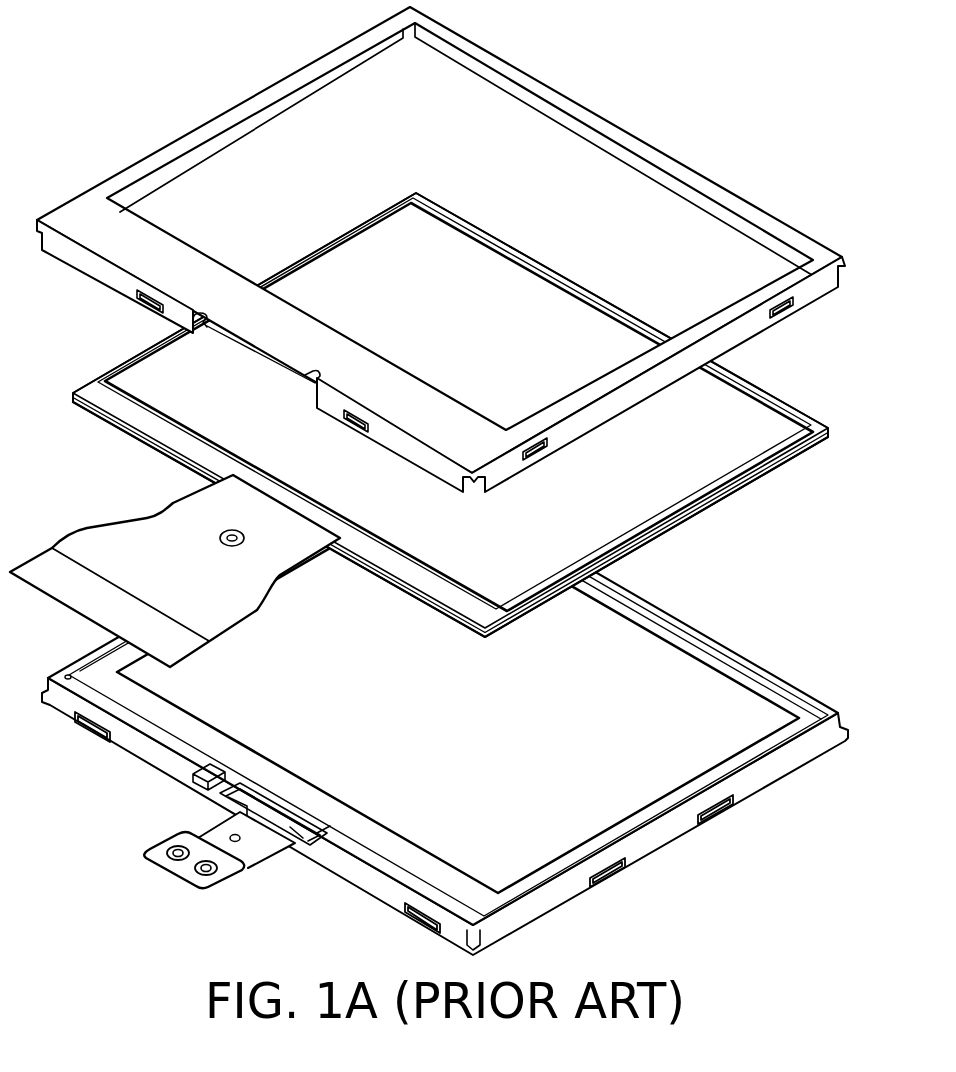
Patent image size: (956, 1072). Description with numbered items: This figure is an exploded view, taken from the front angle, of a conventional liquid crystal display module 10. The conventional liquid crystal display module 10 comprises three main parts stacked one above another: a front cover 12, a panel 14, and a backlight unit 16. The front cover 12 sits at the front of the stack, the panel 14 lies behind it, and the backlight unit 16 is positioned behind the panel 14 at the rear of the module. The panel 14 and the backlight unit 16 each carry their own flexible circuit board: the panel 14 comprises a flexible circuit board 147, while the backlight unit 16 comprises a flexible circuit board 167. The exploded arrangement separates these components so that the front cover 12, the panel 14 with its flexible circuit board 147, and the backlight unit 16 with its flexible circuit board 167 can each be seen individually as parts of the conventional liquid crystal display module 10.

The liquid crystal display module 10 is at (173, 31).
The front cover 12 is at (826, 257).
The panel 14 is at (814, 430).
The flexible circuit board 147 is at (233, 602).
The backlight unit 16 is at (660, 837).
The flexible circuit board 167 is at (245, 845).